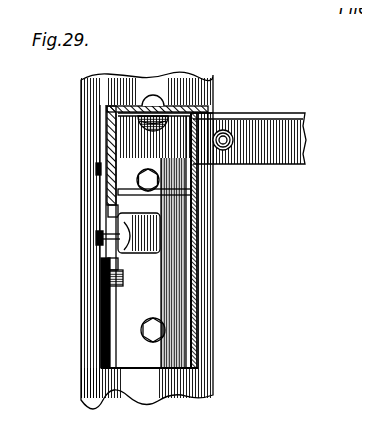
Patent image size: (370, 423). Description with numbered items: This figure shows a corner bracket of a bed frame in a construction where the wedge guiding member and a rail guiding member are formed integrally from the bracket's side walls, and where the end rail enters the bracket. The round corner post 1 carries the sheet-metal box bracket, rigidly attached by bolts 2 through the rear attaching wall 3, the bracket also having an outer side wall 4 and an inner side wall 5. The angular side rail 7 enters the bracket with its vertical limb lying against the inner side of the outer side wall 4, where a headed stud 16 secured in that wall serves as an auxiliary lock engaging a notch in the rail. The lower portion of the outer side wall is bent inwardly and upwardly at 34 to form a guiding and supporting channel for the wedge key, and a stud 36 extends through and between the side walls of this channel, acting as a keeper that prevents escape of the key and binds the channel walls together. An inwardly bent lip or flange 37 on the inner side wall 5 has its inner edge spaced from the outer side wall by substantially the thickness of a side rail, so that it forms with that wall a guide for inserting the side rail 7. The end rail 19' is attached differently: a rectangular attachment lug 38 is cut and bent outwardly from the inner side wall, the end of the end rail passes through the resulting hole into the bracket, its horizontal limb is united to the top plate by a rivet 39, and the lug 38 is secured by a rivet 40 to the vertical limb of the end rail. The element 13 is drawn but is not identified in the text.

The corner post 1 is at (80, 150).
The bolts 2 is at (140, 172).
The rear attaching wall 3 is at (153, 283).
The outer side wall 4 is at (93, 327).
The inner side wall 5 is at (190, 318).
The side rail 7 is at (100, 125).
The block 13 is at (135, 230).
The headed stud 16 is at (100, 175).
The end rail 19' is at (254, 122).
The guiding and supporting channel 34 is at (117, 257).
The stud 36 is at (86, 227).
The inwardly bent lip or flange 37 is at (160, 187).
The attachment lug 38 is at (245, 111).
The rivet 39 is at (152, 90).
The rivet 40 is at (215, 122).